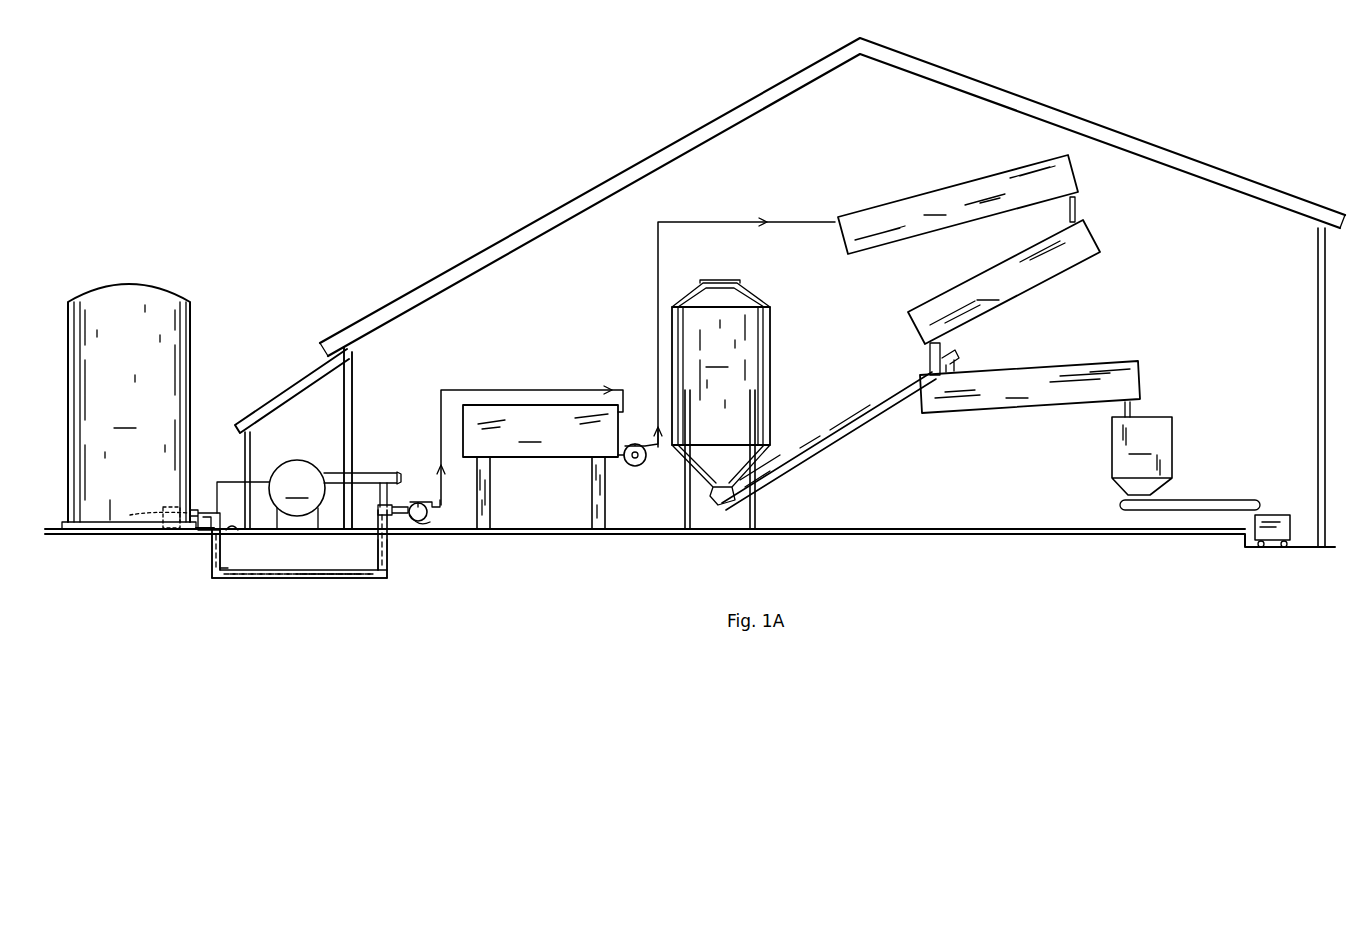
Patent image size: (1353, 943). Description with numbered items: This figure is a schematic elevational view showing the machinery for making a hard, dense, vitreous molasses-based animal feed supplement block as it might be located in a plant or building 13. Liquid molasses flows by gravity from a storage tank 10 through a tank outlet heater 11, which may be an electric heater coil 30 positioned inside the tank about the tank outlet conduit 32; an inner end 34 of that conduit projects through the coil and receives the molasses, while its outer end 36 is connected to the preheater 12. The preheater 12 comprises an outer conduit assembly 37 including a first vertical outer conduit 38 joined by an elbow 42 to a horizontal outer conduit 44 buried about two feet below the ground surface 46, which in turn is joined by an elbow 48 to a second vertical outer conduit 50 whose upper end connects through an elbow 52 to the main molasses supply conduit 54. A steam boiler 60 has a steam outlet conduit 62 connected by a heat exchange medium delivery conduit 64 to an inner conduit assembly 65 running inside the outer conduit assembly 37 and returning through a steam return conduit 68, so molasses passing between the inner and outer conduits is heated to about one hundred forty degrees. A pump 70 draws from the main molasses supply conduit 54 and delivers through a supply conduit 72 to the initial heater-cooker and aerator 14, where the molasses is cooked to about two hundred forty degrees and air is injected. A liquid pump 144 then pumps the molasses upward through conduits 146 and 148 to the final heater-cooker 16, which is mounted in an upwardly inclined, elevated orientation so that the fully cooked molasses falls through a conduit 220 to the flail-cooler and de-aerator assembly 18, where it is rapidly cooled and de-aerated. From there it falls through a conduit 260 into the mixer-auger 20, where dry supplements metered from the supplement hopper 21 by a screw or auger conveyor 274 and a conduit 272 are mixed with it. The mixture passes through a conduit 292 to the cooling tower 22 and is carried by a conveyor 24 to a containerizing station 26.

The storage tank 10 is at (129, 406).
The tank outlet heater 11 is at (175, 528).
The preheater 12 is at (300, 603).
The plant or building 13 is at (952, 67).
The initial heater-cooker and aerator 14 is at (540, 467).
The final heater-cooker 16 is at (958, 204).
The flail-cooler and de-aerator assembly 18 is at (1004, 282).
The mixer-auger 20 is at (1030, 387).
The supplement hopper 21 is at (721, 404).
The cooling tower 22 is at (1142, 456).
The conveyor 24 is at (1186, 500).
The containerizing station 26 is at (1275, 514).
The electric heater coil 30 is at (172, 505).
The tank outlet conduit 32 is at (205, 532).
The inner end 34 is at (150, 513).
The outer end 36 is at (207, 512).
The outer conduit assembly 37 is at (246, 580).
The first vertical outer conduit 38 is at (212, 560).
The elbow 42 is at (222, 572).
The horizontal outer conduit 44 is at (298, 572).
The ground surface 46 is at (240, 530).
The elbow 48 is at (386, 580).
The second vertical outer conduit 50 is at (390, 562).
The elbow 52 is at (378, 511).
The main molasses supply conduit 54 is at (404, 505).
The steam boiler 60 is at (297, 494).
The steam outlet conduit 62 is at (358, 472).
The heat exchange medium delivery conduit 64 is at (384, 490).
The inner conduit assembly 65 is at (330, 578).
The steam return conduit 68 is at (260, 480).
The pump 70 is at (430, 522).
The supply conduit 72 is at (439, 440).
The liquid pump 144 is at (640, 465).
The conduit 146 is at (618, 457).
The conduit 148 is at (656, 385).
The conduit 220 is at (1080, 209).
The conduit 260 is at (928, 352).
The conduit 272 is at (958, 368).
The screw or auger conveyor 274 is at (822, 442).
The conduit 292 is at (1135, 410).